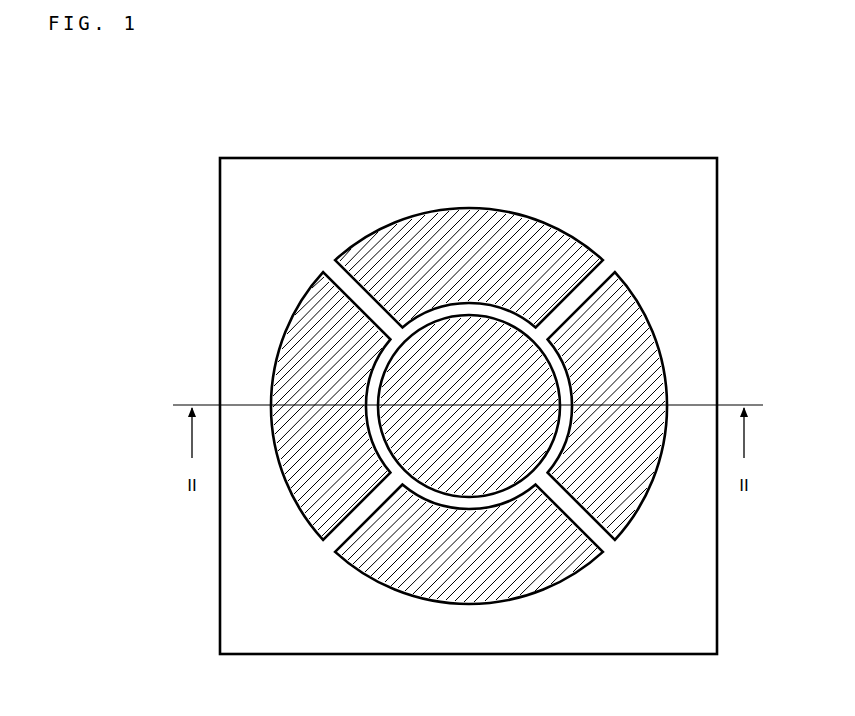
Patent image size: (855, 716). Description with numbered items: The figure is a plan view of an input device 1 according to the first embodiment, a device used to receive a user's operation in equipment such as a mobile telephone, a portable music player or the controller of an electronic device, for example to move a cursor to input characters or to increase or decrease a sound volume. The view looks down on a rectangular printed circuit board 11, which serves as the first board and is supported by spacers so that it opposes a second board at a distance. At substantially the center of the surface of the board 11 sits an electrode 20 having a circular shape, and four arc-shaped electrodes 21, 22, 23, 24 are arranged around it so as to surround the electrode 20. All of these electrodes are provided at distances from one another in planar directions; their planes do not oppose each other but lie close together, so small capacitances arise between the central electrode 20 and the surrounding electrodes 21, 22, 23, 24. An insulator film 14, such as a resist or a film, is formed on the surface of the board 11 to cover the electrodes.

The input device 1 is at (303, 97).
The board 11 is at (220, 157).
The insulator film 14 is at (243, 210).
The electrode 20 is at (478, 338).
The electrode 21 is at (427, 222).
The electrode 22 is at (292, 347).
The electrode 23 is at (427, 590).
The electrode 24 is at (655, 337).